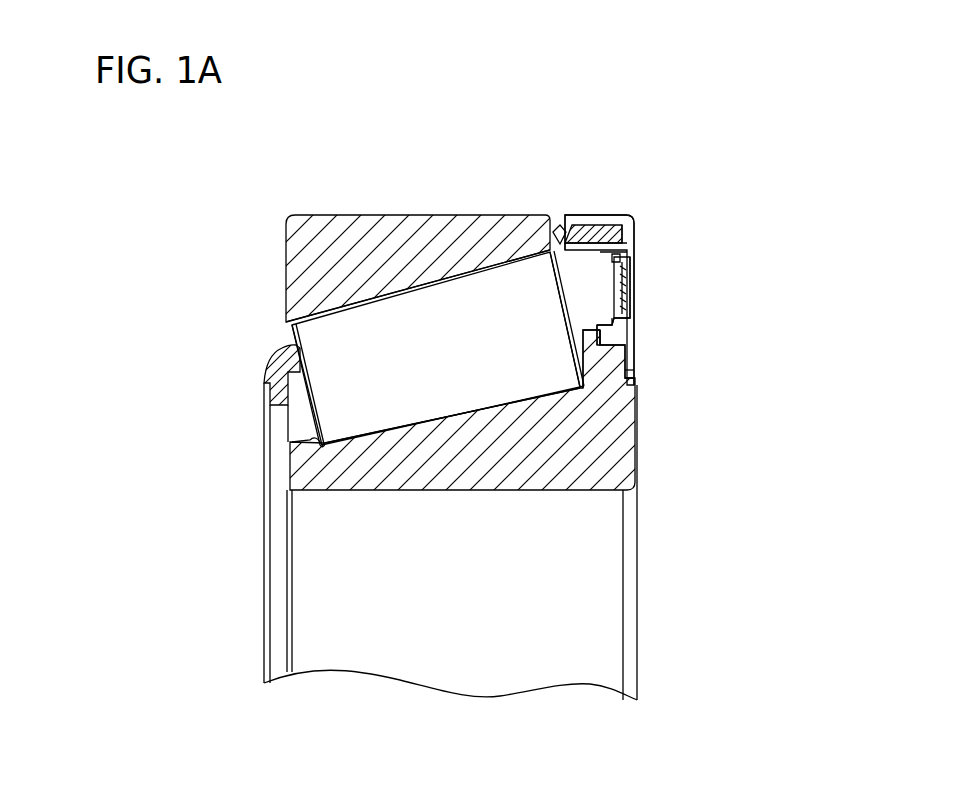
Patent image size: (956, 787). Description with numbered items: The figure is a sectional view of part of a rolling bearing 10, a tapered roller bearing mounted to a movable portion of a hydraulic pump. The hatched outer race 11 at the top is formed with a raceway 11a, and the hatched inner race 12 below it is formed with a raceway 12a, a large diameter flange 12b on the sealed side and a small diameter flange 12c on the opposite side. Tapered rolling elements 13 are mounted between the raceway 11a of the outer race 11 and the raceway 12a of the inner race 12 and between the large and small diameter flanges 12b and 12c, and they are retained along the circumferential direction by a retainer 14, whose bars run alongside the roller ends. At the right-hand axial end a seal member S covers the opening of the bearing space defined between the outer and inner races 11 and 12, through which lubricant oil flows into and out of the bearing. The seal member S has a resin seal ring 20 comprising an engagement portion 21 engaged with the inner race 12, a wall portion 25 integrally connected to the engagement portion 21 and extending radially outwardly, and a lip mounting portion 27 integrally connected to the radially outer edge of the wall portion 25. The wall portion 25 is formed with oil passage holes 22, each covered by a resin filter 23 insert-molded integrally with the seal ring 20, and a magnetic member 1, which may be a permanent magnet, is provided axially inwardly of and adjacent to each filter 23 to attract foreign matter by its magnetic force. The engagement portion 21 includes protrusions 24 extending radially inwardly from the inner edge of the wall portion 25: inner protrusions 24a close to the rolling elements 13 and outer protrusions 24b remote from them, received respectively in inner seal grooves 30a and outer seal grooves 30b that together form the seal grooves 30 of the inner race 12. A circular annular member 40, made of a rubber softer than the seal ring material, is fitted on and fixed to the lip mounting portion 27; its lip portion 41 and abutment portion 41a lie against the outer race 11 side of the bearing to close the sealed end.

The magnetic member 1 is at (598, 250).
The rolling bearing 10 is at (488, 181).
The outer race 11 is at (380, 248).
The raceway 11a is at (433, 292).
The inner race 12 is at (333, 480).
The raceway 12a is at (428, 408).
The large diameter flange 12b is at (596, 338).
The small diameter flange 12c is at (300, 443).
The rolling element 13 is at (340, 340).
The retainer 14 is at (271, 373).
The seal ring 20 is at (640, 384).
The engagement portion 21 is at (598, 325).
The oil passage hole 22 is at (630, 298).
The filter 23 is at (626, 283).
The protrusion 24 is at (765, 386).
The inner protrusion 24a is at (615, 333).
The outer protrusion 24b is at (636, 377).
The wall portion 25 is at (630, 258).
The lip mounting portion 27 is at (620, 218).
The seal groove 30 is at (735, 420).
The inner seal groove 30a is at (602, 330).
The outer seal groove 30b is at (637, 382).
The circular annular member 40 is at (578, 223).
The lip portion 41 is at (607, 222).
The abutment portion 41a is at (555, 228).
The seal member S is at (642, 230).